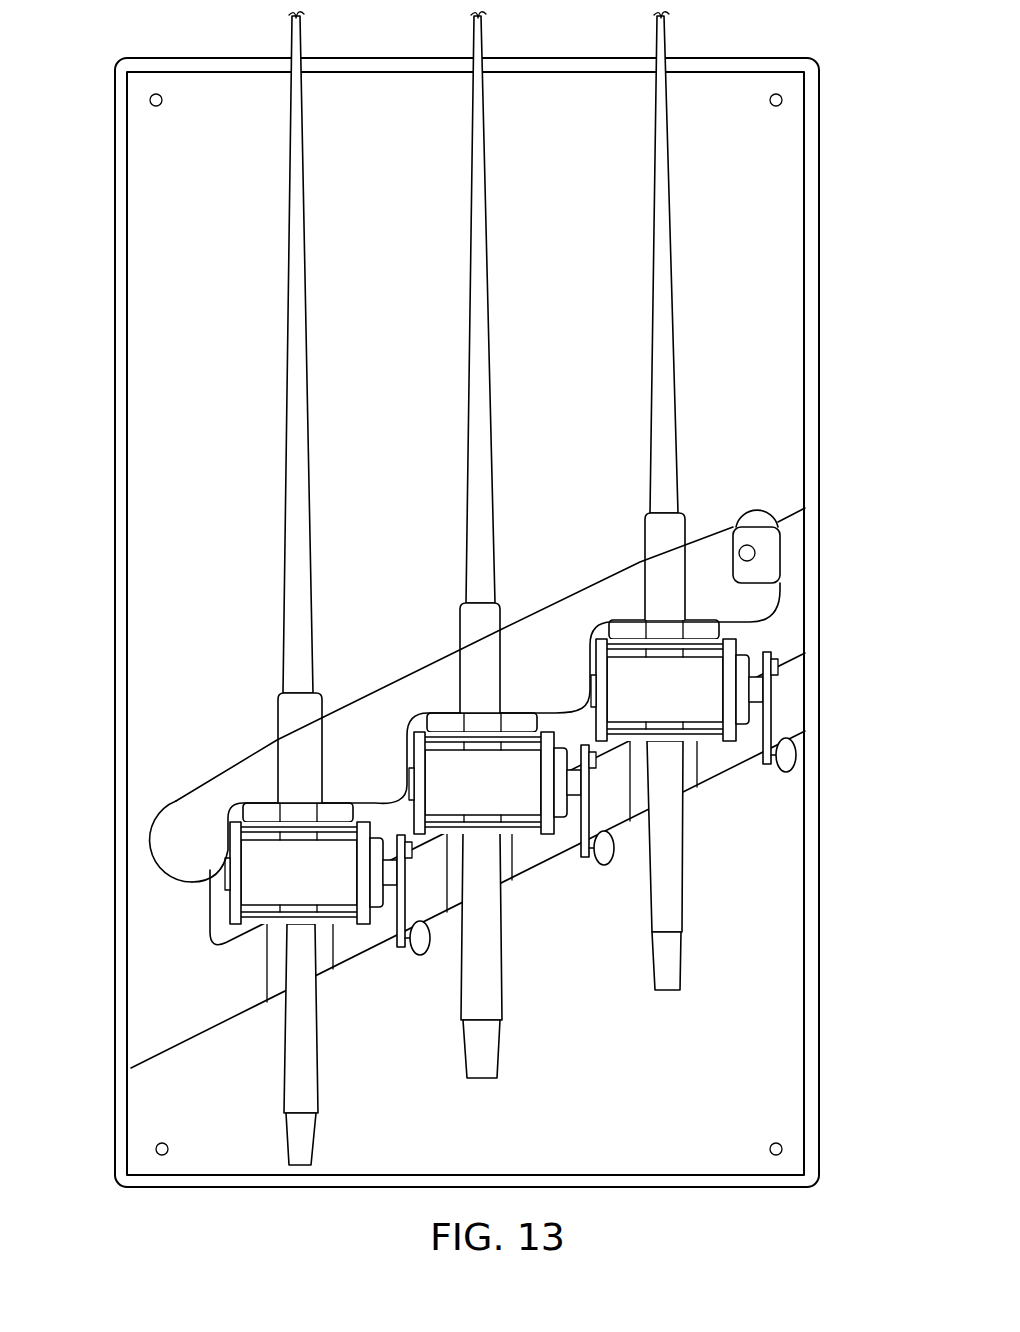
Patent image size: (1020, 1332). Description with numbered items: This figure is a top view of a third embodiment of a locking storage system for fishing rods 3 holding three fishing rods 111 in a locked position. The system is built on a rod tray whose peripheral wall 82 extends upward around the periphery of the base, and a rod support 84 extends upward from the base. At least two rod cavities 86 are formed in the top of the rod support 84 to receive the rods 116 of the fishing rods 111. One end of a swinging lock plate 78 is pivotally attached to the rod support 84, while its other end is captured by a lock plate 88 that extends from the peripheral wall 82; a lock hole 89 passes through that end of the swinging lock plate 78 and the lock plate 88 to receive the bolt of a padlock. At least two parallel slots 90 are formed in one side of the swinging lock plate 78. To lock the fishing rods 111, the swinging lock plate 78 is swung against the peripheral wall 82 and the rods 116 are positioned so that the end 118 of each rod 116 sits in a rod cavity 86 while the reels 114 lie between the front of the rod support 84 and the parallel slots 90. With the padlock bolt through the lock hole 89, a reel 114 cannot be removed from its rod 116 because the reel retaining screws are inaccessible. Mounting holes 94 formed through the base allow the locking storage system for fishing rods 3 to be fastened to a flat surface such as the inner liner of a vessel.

The locking storage system for fishing rods 3 is at (474, 626).
The swinging lock plate 78 is at (368, 766).
The peripheral wall 82 is at (117, 628).
The rod support 84 is at (358, 957).
The rod cavity 86 is at (278, 993).
The lock plate 88 is at (781, 553).
The lock hole 89 is at (747, 545).
The parallel slot 90 is at (262, 800).
The mounting hole 94 is at (148, 97).
The fishing rod 111 is at (323, 518).
The reel 114 is at (510, 787).
The rod 116 is at (296, 362).
The end 118 is at (303, 1073).